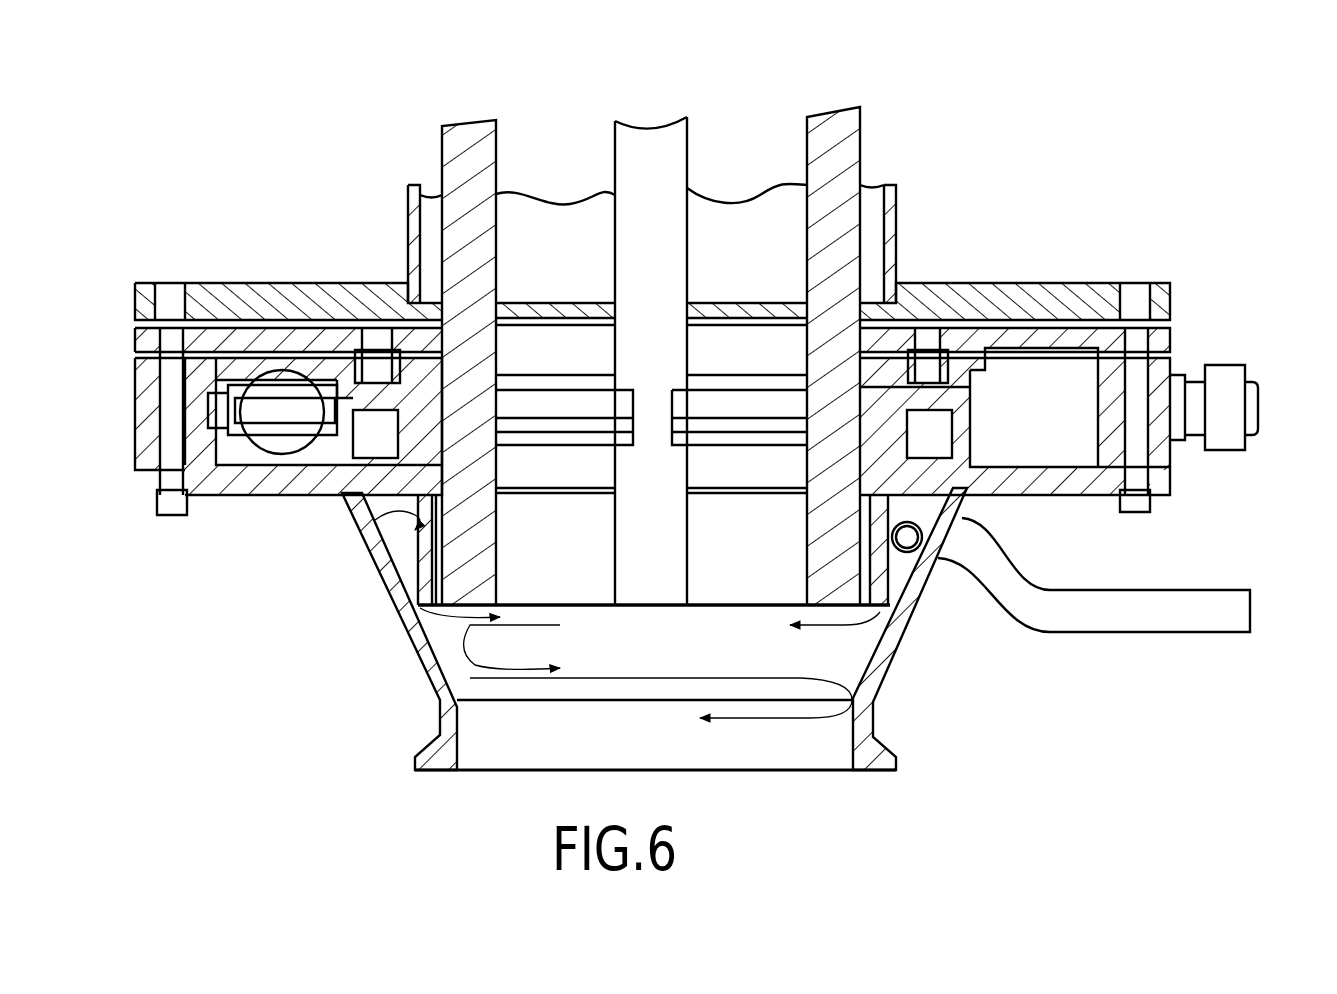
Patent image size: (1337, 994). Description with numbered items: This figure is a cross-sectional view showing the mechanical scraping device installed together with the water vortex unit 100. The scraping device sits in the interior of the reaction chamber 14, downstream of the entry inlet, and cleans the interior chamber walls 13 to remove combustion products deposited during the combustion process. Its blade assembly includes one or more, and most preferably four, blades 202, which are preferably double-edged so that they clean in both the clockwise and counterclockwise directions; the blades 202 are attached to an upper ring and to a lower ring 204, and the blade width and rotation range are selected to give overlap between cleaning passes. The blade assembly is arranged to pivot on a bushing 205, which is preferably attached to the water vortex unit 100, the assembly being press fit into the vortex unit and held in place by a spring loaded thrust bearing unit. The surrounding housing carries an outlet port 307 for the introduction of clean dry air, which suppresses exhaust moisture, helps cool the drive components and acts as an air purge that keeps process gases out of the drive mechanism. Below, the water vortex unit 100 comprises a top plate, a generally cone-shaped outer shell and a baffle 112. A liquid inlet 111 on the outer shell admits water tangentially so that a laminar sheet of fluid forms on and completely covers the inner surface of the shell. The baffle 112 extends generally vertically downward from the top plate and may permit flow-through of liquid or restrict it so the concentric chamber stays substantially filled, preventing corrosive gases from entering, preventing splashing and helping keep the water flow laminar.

The water vortex unit 100 is at (345, 598).
The liquid inlet 111 is at (1158, 632).
The baffle 112 is at (900, 602).
The interior chamber walls 13 is at (893, 230).
The reaction chamber 14 is at (561, 273).
The blade 202 is at (838, 130).
The lower ring 204 is at (967, 405).
The bushing 205 is at (965, 490).
The outlet port 307 is at (1218, 455).